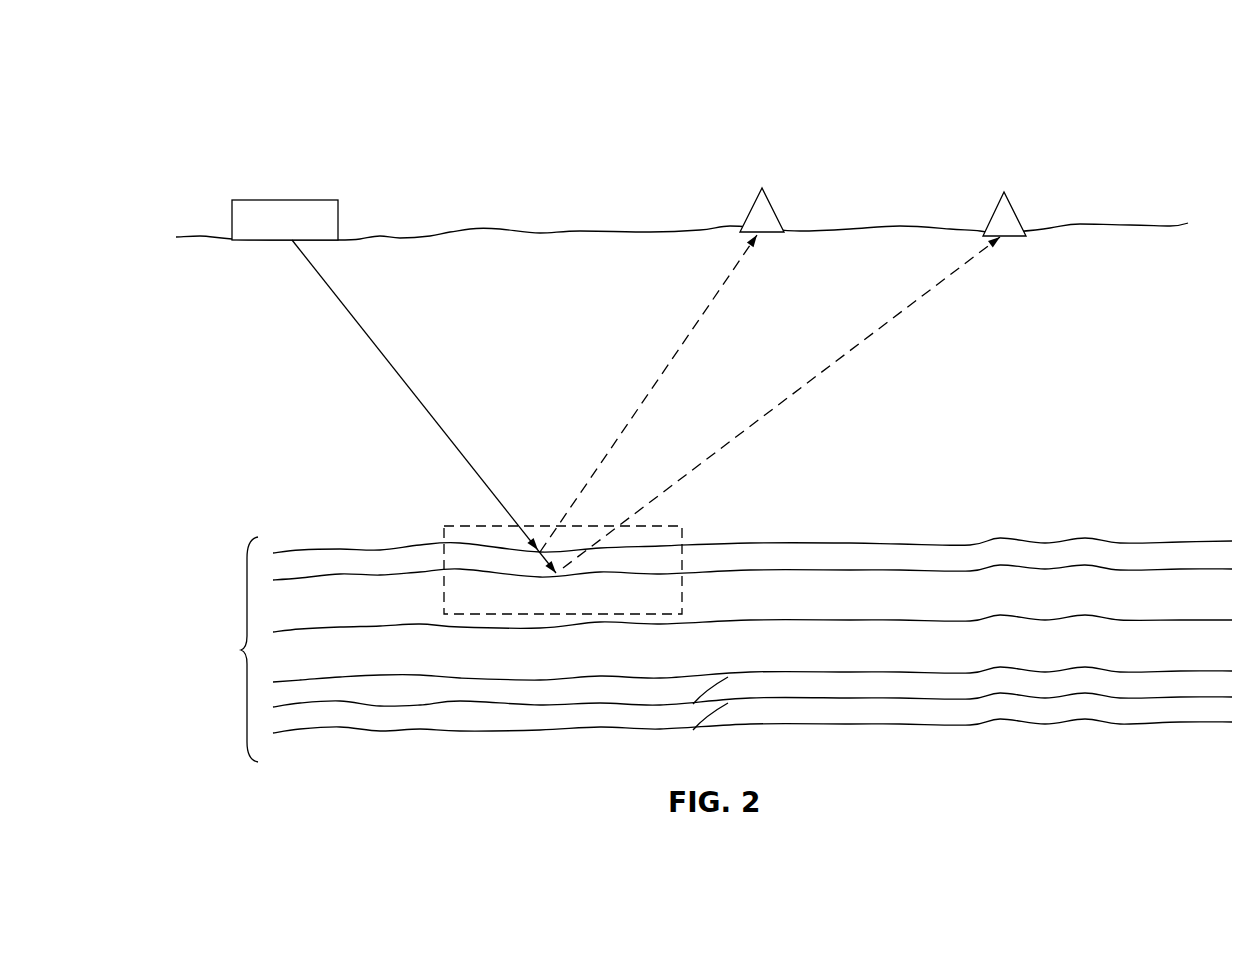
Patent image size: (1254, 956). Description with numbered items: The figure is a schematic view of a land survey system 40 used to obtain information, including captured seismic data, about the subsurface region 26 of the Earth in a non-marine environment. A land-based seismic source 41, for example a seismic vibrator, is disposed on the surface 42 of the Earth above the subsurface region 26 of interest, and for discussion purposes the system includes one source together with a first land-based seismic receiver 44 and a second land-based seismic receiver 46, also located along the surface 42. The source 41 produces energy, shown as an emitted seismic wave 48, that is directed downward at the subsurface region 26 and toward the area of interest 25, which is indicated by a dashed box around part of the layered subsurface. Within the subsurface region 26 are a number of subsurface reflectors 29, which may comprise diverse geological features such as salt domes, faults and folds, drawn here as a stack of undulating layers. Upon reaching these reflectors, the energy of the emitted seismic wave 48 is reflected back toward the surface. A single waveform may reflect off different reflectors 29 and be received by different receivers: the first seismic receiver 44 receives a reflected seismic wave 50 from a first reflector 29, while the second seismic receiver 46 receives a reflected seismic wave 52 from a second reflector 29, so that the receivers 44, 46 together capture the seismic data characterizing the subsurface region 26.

The land survey system 40 is at (956, 115).
The land-based seismic source 41 is at (276, 200).
The surface of the Earth 42 is at (458, 230).
The first land-based seismic receiver 44 is at (778, 212).
The second land-based seismic receiver 46 is at (1020, 223).
The emitted seismic wave 48 is at (397, 373).
The reflected seismic wave 50 is at (686, 340).
The reflected seismic wave 52 is at (822, 373).
The area of interest 25 is at (690, 587).
The subsurface region 26 is at (714, 633).
The subsurface reflectors 29 is at (303, 577).